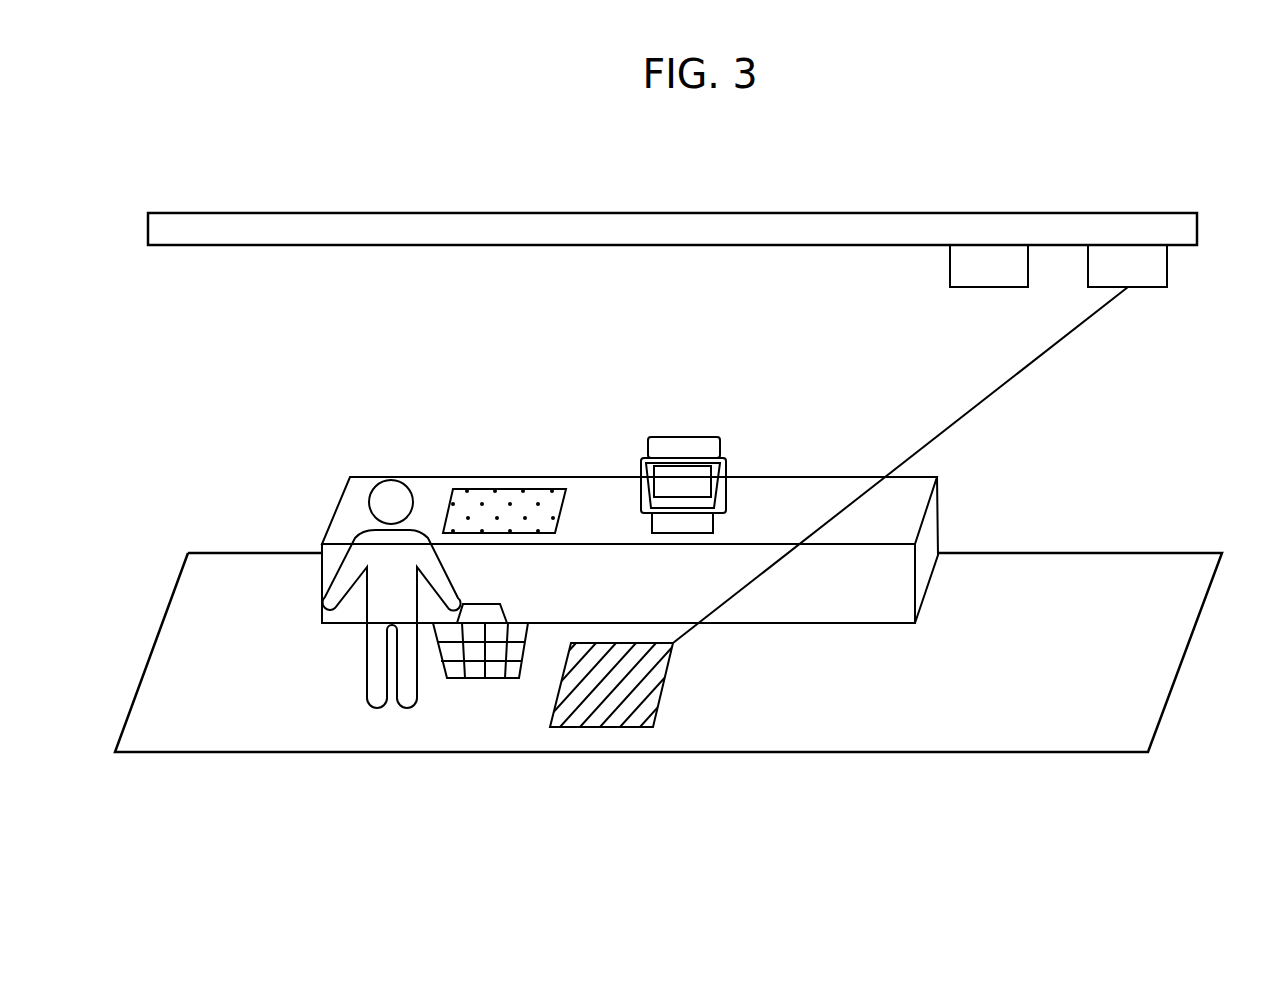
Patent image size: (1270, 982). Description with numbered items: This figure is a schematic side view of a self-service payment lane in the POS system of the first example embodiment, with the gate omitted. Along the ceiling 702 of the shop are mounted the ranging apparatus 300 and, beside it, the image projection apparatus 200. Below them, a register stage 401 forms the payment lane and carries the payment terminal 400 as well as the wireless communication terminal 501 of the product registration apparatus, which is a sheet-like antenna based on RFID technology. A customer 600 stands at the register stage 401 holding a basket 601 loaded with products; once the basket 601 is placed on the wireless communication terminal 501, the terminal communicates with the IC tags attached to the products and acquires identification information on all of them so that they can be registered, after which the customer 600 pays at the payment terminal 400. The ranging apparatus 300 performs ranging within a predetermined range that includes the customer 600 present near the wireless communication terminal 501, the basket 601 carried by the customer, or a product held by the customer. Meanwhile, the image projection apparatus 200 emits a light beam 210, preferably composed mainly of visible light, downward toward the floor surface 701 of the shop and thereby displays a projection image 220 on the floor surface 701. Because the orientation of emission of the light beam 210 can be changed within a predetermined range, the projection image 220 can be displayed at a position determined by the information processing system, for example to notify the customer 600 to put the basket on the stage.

The image projection apparatus 200 is at (1133, 245).
The light beam 210 is at (955, 420).
The projection image 220 is at (628, 727).
The ranging apparatus 300 is at (985, 245).
The payment terminal 400 is at (678, 437).
The register stage 401 is at (838, 487).
The wireless communication terminal 501 is at (513, 489).
The customer 600 is at (375, 708).
The basket 601 is at (478, 678).
The floor surface 701 is at (1160, 578).
The ceiling 702 is at (636, 213).